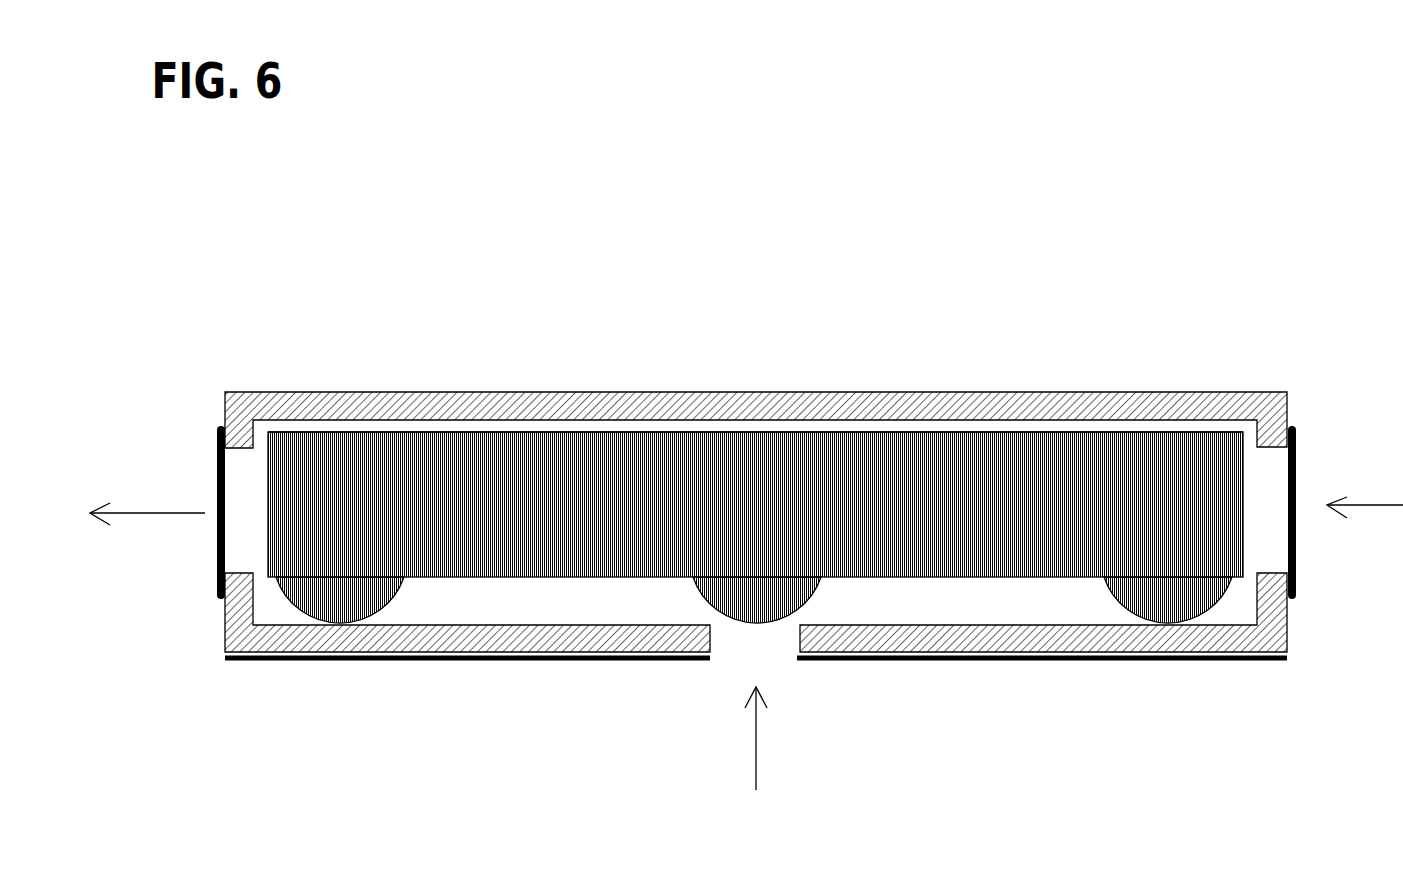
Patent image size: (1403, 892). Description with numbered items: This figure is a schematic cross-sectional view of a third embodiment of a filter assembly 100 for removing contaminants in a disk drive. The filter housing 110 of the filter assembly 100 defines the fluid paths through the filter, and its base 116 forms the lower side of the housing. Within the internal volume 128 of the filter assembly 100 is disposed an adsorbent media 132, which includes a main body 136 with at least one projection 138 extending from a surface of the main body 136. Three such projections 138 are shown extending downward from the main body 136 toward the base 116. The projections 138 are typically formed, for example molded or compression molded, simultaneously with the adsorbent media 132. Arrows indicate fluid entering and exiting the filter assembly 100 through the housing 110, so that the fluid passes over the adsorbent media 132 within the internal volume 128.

The filter assembly 100 is at (607, 297).
The filter housing 110 is at (985, 390).
The base 116 is at (585, 635).
The internal volume 128 is at (972, 600).
The adsorbent media 132 is at (440, 433).
The main body 136 is at (1045, 483).
The projection 138 is at (340, 590).